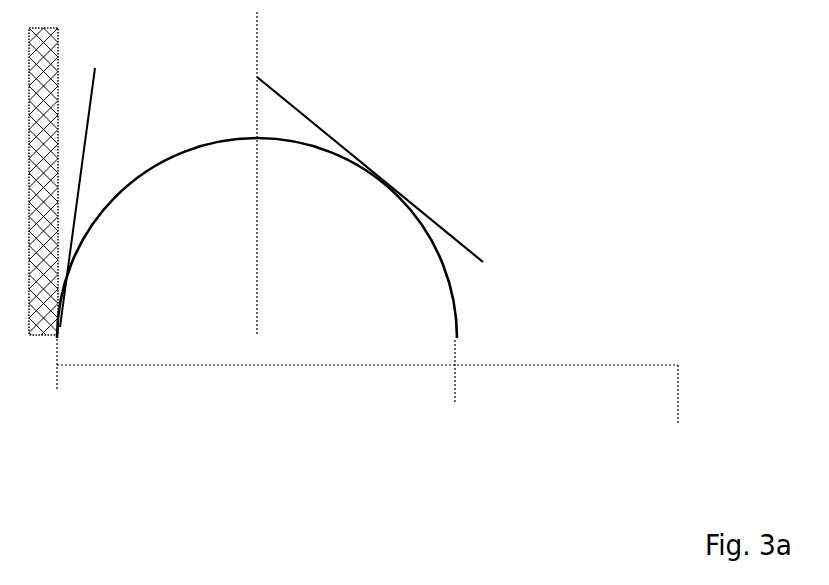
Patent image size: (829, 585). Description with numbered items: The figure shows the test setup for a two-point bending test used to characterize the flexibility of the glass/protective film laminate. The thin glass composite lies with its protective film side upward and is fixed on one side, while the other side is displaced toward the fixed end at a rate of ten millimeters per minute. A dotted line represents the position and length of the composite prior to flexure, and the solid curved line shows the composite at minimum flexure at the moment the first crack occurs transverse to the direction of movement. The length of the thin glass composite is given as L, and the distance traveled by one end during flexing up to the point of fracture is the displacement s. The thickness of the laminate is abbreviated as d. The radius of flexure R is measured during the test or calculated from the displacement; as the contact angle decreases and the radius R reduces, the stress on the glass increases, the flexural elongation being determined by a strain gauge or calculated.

The radius of flexure R is at (352, 167).
The thickness of thin glass composite d is at (128, 158).
The length of thin glass composite L is at (57, 423).
The displacement of thin glass composite s is at (455, 418).